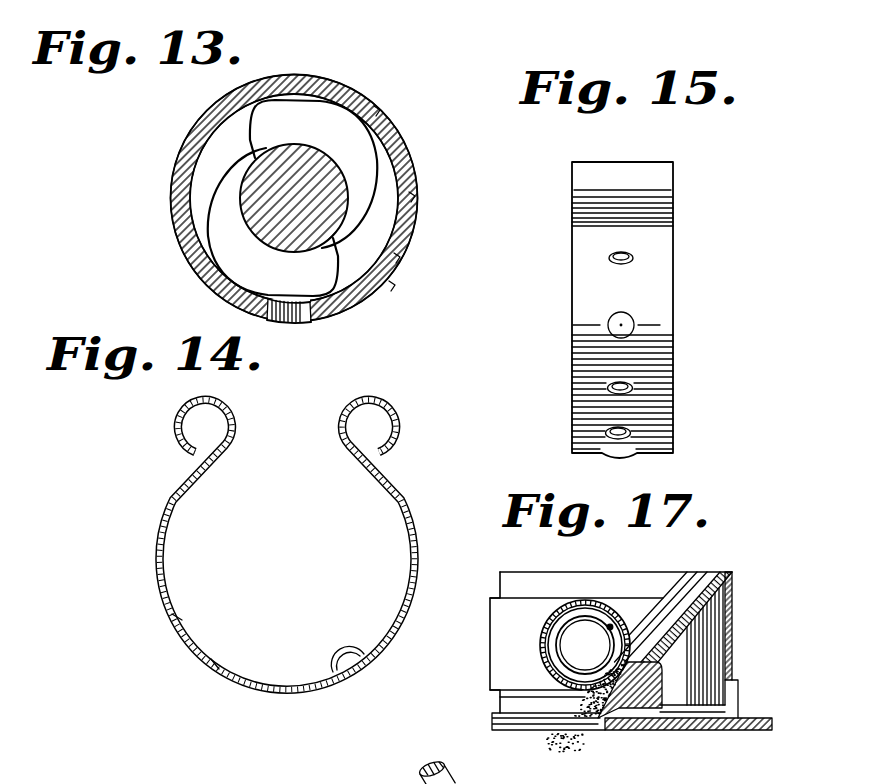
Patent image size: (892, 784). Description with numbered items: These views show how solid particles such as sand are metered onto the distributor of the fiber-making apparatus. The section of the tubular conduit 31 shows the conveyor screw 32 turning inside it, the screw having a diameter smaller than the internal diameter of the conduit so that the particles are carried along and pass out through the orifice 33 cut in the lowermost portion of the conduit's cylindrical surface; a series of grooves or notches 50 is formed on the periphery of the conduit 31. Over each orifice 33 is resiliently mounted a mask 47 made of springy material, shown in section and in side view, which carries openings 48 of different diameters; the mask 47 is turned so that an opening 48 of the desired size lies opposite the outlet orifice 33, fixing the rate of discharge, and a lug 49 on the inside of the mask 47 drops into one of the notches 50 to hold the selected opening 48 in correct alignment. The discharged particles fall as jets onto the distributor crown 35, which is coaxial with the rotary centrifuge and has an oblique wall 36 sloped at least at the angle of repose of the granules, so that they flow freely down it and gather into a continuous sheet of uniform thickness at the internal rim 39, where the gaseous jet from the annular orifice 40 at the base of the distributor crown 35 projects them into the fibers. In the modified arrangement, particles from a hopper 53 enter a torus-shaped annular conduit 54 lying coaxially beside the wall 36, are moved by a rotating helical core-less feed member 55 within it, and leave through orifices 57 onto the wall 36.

In FIG. 13, the tubular conduit 31 is at (186, 231).
In FIG. 13, the conveyor screw 32 is at (313, 220).
In FIG. 13, the orifice 33 is at (298, 316).
In FIG. 13, the notch 50 is at (398, 258).
In FIG. 14, the mask 47 is at (161, 519).
In FIG. 15, the mask 47 is at (657, 348).
In FIG. 14, the opening 48 is at (181, 616).
In FIG. 15, the opening 48 is at (640, 433).
In FIG. 14, the lug 49 is at (348, 652).
In FIG. 17, the distributor crown 35 is at (741, 639).
In FIG. 17, the oblique wall 36 is at (663, 625).
In FIG. 17, the internal rim 39 is at (552, 729).
In FIG. 17, the annular orifice 40 is at (612, 724).
In FIG. 17, the hopper 53 is at (357, 783).
In FIG. 17, the annular conduit 54 is at (555, 675).
In FIG. 17, the helical core-less feed member 55 is at (565, 625).
In FIG. 17, the orifice 57 is at (632, 708).